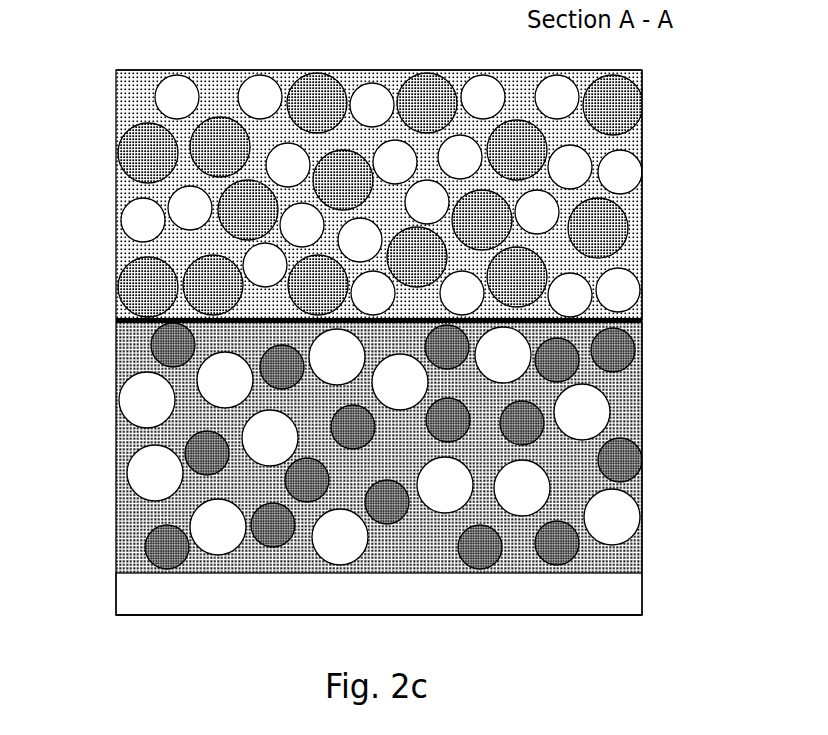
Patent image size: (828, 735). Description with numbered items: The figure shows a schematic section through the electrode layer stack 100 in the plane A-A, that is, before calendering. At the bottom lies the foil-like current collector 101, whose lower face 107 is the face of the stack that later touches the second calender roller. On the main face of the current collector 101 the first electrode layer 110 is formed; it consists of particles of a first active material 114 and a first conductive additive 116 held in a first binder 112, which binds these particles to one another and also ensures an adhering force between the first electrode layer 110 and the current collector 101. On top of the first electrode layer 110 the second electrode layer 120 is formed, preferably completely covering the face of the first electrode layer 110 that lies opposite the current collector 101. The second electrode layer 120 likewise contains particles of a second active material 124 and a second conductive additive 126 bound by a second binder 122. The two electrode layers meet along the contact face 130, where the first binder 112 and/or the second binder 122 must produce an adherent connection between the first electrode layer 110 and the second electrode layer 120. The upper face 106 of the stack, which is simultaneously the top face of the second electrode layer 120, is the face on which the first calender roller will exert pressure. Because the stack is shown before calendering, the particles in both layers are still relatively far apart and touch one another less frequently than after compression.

The electrode layer stack 100 is at (77, 44).
The current collector 101 is at (116, 597).
The face of the electrode stack which touches the first calender roller 106 is at (395, 71).
The face of the electrode stack which touches the second calender roller 107 is at (603, 617).
The first electrode layer 110 is at (116, 454).
The first binder 112 is at (644, 404).
The first active material 114 is at (134, 400).
The first conductive additive 116 is at (644, 453).
The second electrode layer 120 is at (115, 200).
The second binder 122 is at (645, 198).
The second active material 124 is at (316, 78).
The second conductive additive 126 is at (178, 88).
The connection face between the first and second electrode layer 130 is at (116, 321).